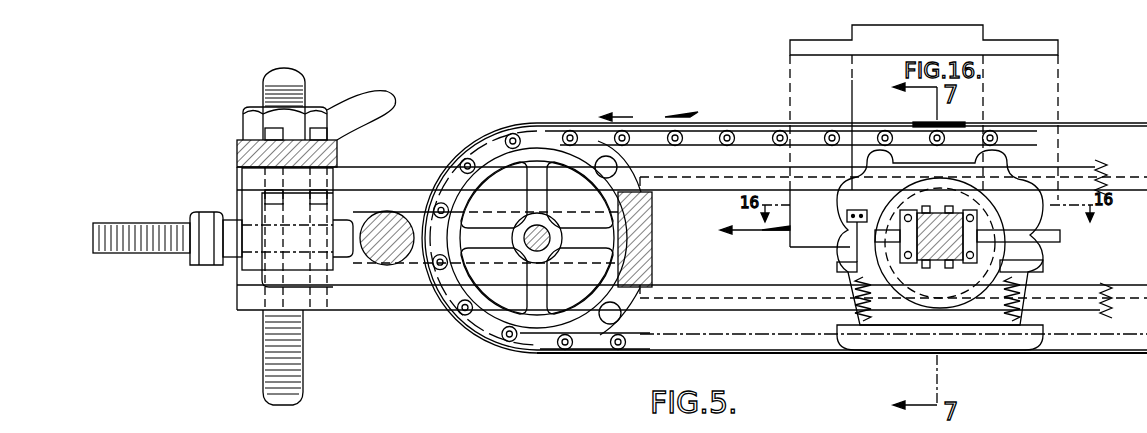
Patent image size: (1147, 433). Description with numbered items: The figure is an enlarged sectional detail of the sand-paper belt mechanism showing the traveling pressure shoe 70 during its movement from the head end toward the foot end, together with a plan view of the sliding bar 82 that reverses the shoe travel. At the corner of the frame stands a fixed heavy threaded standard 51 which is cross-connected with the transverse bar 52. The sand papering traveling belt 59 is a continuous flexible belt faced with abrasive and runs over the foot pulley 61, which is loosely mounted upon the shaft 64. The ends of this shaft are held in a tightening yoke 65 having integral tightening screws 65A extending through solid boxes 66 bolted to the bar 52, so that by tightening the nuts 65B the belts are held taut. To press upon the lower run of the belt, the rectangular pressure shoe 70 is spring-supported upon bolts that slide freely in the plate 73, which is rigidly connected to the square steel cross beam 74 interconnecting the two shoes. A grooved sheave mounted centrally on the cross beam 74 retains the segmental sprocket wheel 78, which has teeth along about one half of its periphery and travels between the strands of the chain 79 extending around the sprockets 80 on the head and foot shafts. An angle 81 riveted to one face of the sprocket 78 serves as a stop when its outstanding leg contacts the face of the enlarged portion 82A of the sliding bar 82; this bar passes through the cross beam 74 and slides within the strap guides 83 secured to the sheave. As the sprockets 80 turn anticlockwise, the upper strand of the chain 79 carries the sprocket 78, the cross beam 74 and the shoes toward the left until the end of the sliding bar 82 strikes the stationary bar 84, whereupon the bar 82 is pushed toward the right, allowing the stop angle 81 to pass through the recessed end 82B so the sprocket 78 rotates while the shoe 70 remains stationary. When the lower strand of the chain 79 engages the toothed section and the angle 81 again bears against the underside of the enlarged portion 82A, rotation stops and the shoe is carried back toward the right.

In FIG. 5, the standard 51 is at (303, 384).
In FIG. 5, the bar 52 is at (237, 160).
In FIG. 5, the sand papering traveling belt 59 is at (575, 124).
In FIG. 5, the foot pulley 61 is at (622, 322).
In FIG. 5, the shaft 64 is at (528, 248).
In FIG. 5, the tightening yoke 65 is at (385, 262).
In FIG. 5, the tightening screw 65A is at (110, 253).
In FIG. 5, the nut 65B is at (203, 264).
In FIG. 5, the solid box 66 is at (324, 267).
In FIG. 5, the pressure shoe 70 is at (970, 350).
In FIG. 5, the plate 73 is at (1043, 267).
In FIG. 5, the cross beam 74 is at (942, 244).
In FIG. 5, the sprocket wheel 78 is at (1025, 253).
In FIG. 5, the chain 79 is at (742, 130).
In FIG. 5, the sprocket 80 is at (513, 124).
In FIG. 5, the angle 81 is at (847, 217).
In FIG. 5, the sliding bar 82 is at (808, 241).
In FIG. 16, the sliding bar 82 is at (1017, 52).
In FIG. 16, the enlarged portion 82A is at (883, 30).
In FIG. 16, the recessed end 82B is at (1050, 30).
In FIG. 5, the strap guide 83 is at (903, 230).
In FIG. 5, the stationary bar 84 is at (652, 280).